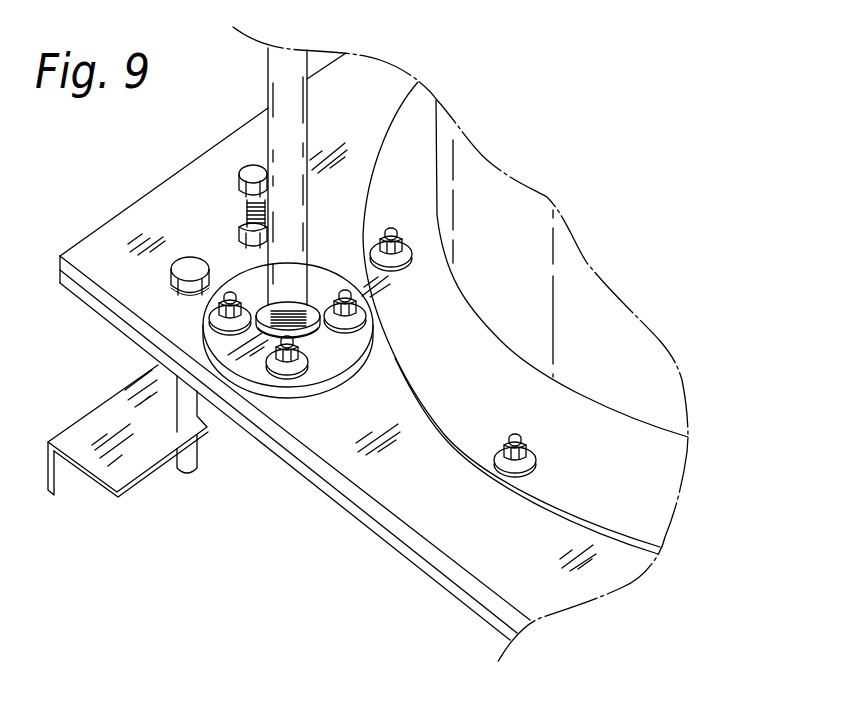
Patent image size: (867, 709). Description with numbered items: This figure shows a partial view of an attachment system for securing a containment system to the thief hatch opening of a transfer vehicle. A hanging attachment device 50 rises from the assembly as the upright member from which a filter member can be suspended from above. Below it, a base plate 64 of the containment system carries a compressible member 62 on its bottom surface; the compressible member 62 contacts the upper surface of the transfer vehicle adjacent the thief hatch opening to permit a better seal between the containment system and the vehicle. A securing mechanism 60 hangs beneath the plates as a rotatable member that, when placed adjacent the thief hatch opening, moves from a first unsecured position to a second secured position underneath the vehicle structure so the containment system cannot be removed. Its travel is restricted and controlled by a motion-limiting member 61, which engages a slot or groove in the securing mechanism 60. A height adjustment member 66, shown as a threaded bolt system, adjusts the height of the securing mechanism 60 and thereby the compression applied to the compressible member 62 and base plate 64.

The hanging attachment device 50 is at (267, 83).
The securing mechanism 60 is at (100, 467).
The motion-limiting member 61 is at (199, 457).
The compressible member 62 is at (308, 477).
The base plate 64 is at (108, 245).
The height adjustment member 66 is at (247, 167).